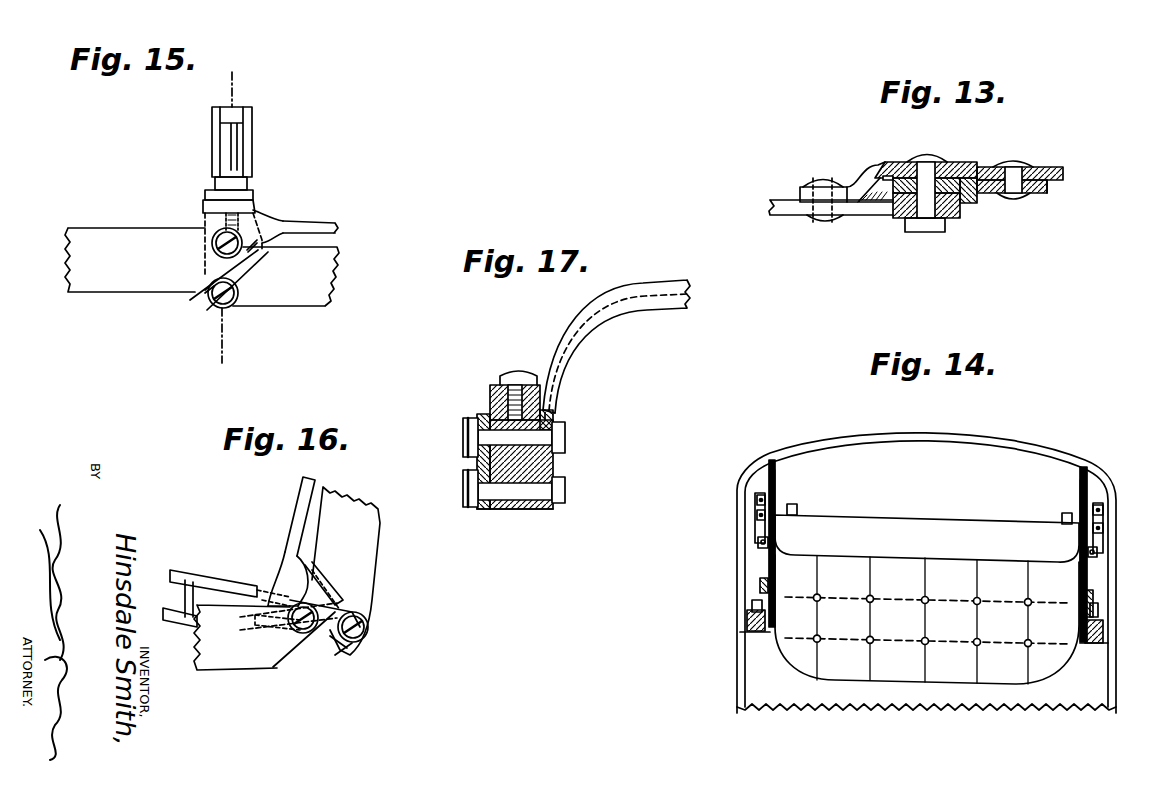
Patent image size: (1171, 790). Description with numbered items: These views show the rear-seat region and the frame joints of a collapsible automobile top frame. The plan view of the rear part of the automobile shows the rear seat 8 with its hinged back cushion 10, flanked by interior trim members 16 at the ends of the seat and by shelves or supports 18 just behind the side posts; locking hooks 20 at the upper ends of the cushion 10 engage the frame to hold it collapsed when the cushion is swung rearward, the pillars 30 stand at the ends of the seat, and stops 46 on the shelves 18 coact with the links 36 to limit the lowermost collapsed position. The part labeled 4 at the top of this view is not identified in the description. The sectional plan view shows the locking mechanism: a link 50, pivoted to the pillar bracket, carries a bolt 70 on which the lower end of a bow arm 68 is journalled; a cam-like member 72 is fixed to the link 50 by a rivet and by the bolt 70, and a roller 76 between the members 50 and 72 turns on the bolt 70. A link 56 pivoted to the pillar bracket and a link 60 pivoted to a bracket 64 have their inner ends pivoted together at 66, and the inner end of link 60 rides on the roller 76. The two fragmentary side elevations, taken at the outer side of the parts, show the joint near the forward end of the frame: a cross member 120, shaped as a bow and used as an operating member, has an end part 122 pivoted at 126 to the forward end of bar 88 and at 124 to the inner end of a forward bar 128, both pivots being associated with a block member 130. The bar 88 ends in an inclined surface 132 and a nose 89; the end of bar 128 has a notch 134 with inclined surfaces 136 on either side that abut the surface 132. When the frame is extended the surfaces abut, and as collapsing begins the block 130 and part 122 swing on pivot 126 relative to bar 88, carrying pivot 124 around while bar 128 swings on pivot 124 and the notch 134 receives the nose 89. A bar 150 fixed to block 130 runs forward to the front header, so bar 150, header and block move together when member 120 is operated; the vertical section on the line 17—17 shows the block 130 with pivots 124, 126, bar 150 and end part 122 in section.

In FIG. 14, the cover 4 is at (970, 437).
In FIG. 14, the rear seat 8 is at (927, 619).
In FIG. 14, the back cushion 10 is at (927, 538).
In FIG. 14, the interior trim members 16 is at (1080, 576).
In FIG. 15, the section line 17— 17 is at (207, 72).
In FIG. 14, the shelves or supports 18 is at (1103, 565).
In FIG. 14, the locking hooks 20 is at (1063, 515).
In FIG. 14, the pillars 30 is at (1105, 630).
In FIG. 14, the link 36 is at (1087, 608).
In FIG. 14, the stops 46 is at (1088, 551).
In FIG. 13, the link 50 is at (800, 215).
In FIG. 14, the link 50 is at (1096, 600).
In FIG. 13, the link 56 is at (1007, 150).
In FIG. 13, the link 60 is at (1033, 193).
In FIG. 14, the link 60 is at (1103, 530).
In FIG. 14, the bracket 64 is at (1094, 507).
In FIG. 13, the pivot 66 is at (1012, 172).
In FIG. 13, the bow arm 68 is at (975, 203).
In FIG. 13, the bolt 70 is at (926, 232).
In FIG. 13, the cam-like member 72 is at (1045, 167).
In FIG. 13, the roller 76 is at (883, 177).
In FIG. 15, the bar 88 is at (105, 232).
In FIG. 16, the bar 88 is at (228, 667).
In FIG. 17, the bar 88 is at (484, 416).
In FIG. 15, the nose 89 is at (250, 200).
In FIG. 16, the nose 89 is at (333, 643).
In FIG. 15, the cross member 120 is at (253, 102).
In FIG. 16, the cross member 120 is at (167, 578).
In FIG. 17, the cross member 120 is at (660, 290).
In FIG. 16, the end part 122 is at (250, 585).
In FIG. 17, the end part 122 is at (560, 384).
In FIG. 15, the pivot 124 is at (208, 310).
In FIG. 16, the pivot 124 is at (368, 627).
In FIG. 17, the pivot 124 is at (560, 491).
In FIG. 15, the pivot 126 is at (215, 238).
In FIG. 16, the pivot 126 is at (305, 640).
In FIG. 17, the pivot 126 is at (560, 439).
In FIG. 15, the forward bar 128 is at (262, 306).
In FIG. 16, the forward bar 128 is at (367, 538).
In FIG. 17, the forward bar 128 is at (482, 509).
In FIG. 15, the block member 130 is at (268, 227).
In FIG. 16, the block member 130 is at (300, 570).
In FIG. 17, the block member 130 is at (530, 510).
In FIG. 15, the inclined surface 132 is at (245, 273).
In FIG. 16, the inclined surface 132 is at (290, 670).
In FIG. 15, the notch 134 is at (233, 280).
In FIG. 16, the notch 134 is at (360, 600).
In FIG. 15, the inclined surfaces 136 is at (203, 277).
In FIG. 16, the inclined surfaces 136 is at (337, 650).
In FIG. 15, the bar 150 is at (330, 221).
In FIG. 16, the bar 150 is at (307, 490).
In FIG. 17, the bar 150 is at (493, 393).